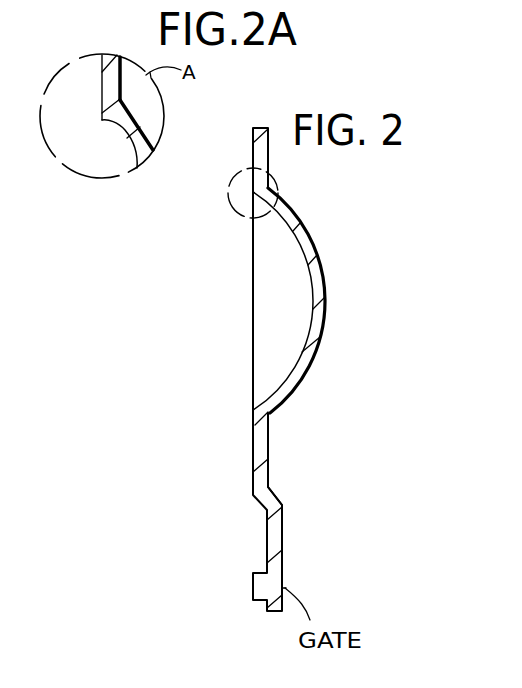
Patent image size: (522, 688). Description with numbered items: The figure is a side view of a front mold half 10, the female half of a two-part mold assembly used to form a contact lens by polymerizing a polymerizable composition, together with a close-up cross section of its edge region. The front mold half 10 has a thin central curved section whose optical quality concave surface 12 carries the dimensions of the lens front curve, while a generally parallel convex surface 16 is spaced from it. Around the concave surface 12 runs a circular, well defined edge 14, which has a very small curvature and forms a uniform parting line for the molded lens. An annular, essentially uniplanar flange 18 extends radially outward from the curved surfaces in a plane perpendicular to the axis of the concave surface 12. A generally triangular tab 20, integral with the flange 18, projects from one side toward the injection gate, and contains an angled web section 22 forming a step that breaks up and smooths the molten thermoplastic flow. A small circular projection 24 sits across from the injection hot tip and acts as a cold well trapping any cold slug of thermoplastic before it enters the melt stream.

In FIG. 2, the front mold half 10 is at (223, 297).
In FIG. 2, the concave surface 12 is at (313, 346).
In FIG. 2A, the well defined edge 14 is at (102, 120).
In FIG. 2, the well defined edge 14 is at (253, 205).
In FIG. 2, the convex surface 16 is at (320, 258).
In FIG. 2, the flange 18 is at (253, 144).
In FIG. 2, the tab 20 is at (267, 538).
In FIG. 2, the web section 22 is at (280, 500).
In FIG. 2, the circular projection 24 is at (253, 590).